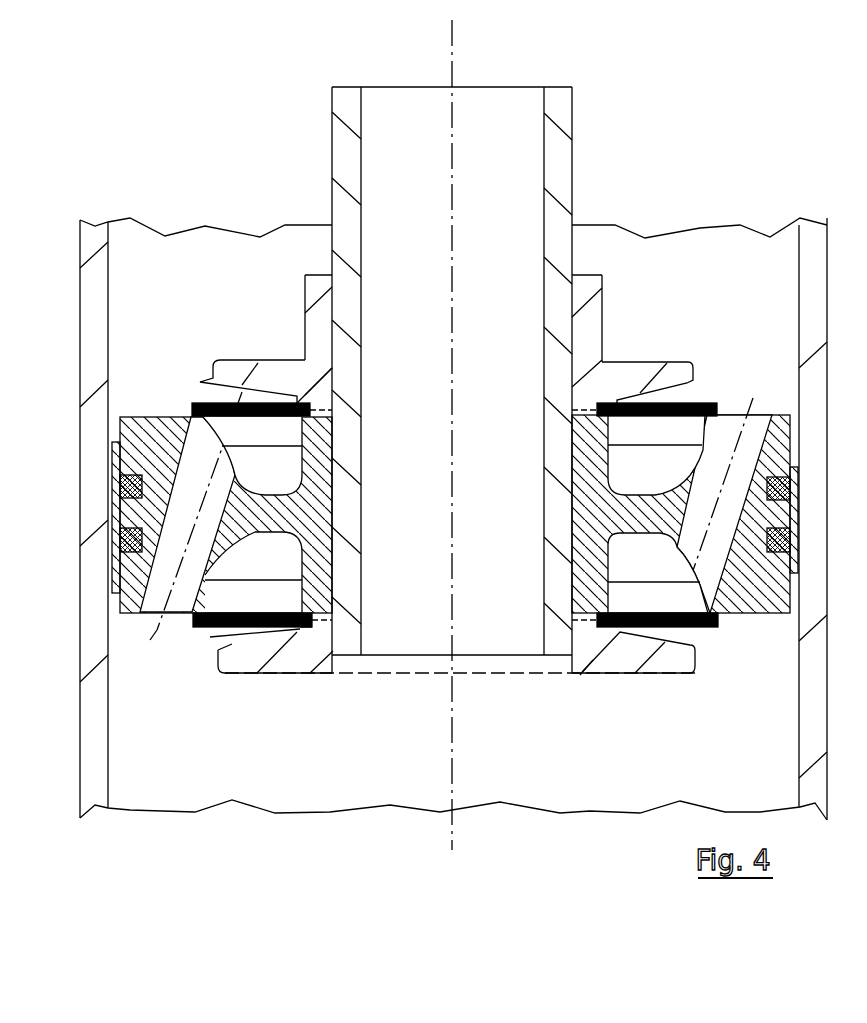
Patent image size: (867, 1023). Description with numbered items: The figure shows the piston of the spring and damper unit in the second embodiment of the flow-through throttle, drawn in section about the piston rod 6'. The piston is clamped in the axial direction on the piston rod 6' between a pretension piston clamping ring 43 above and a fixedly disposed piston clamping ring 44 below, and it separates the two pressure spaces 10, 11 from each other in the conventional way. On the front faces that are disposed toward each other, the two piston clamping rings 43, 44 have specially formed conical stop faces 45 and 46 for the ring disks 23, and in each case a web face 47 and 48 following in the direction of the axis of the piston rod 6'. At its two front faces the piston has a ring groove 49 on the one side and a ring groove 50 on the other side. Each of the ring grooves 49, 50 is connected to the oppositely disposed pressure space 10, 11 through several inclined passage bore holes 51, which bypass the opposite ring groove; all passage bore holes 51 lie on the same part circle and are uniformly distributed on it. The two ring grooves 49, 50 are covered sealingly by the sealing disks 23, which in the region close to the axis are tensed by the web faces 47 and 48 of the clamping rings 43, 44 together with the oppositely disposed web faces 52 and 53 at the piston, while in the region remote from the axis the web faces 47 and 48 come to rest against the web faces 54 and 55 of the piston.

The piston rod 6' is at (443, 376).
The pressure space 10 is at (713, 311).
The pressure space 11 is at (716, 780).
The ring disk 23 is at (192, 405).
The pretension piston clamping ring 43 is at (308, 280).
The fixedly disposed piston clamping ring 44 is at (248, 665).
The conical stop face 45 is at (198, 382).
The conical stop face 46 is at (210, 637).
The web face 47 is at (297, 403).
The web face 48 is at (305, 627).
The ring groove 49 is at (290, 475).
The ring groove 50 is at (290, 578).
The passage bore hole 51 is at (199, 547).
The web face 52 is at (335, 425).
The web face 53 is at (302, 617).
The web face 54 is at (190, 410).
The web face 55 is at (165, 648).